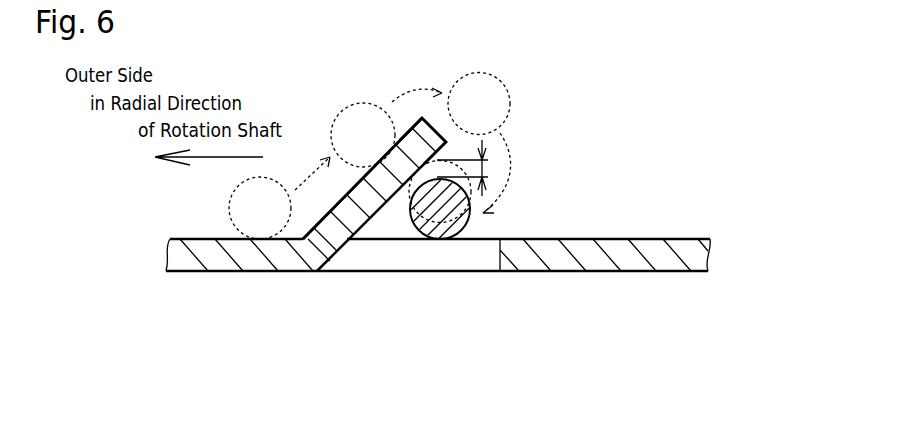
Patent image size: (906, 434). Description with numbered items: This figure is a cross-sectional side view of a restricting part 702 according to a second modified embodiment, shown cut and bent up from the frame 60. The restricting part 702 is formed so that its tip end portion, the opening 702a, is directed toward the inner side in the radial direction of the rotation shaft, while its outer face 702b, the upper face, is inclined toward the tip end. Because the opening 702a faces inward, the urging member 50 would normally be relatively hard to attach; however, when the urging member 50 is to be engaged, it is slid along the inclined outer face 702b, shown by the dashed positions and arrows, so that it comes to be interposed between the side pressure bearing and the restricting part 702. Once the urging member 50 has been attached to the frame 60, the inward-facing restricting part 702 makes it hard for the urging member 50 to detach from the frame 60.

The frame 60 is at (643, 238).
The restricting part 702 is at (378, 208).
The opening 702a is at (447, 153).
The outer face 702b is at (345, 193).
The urging member 50 is at (472, 227).